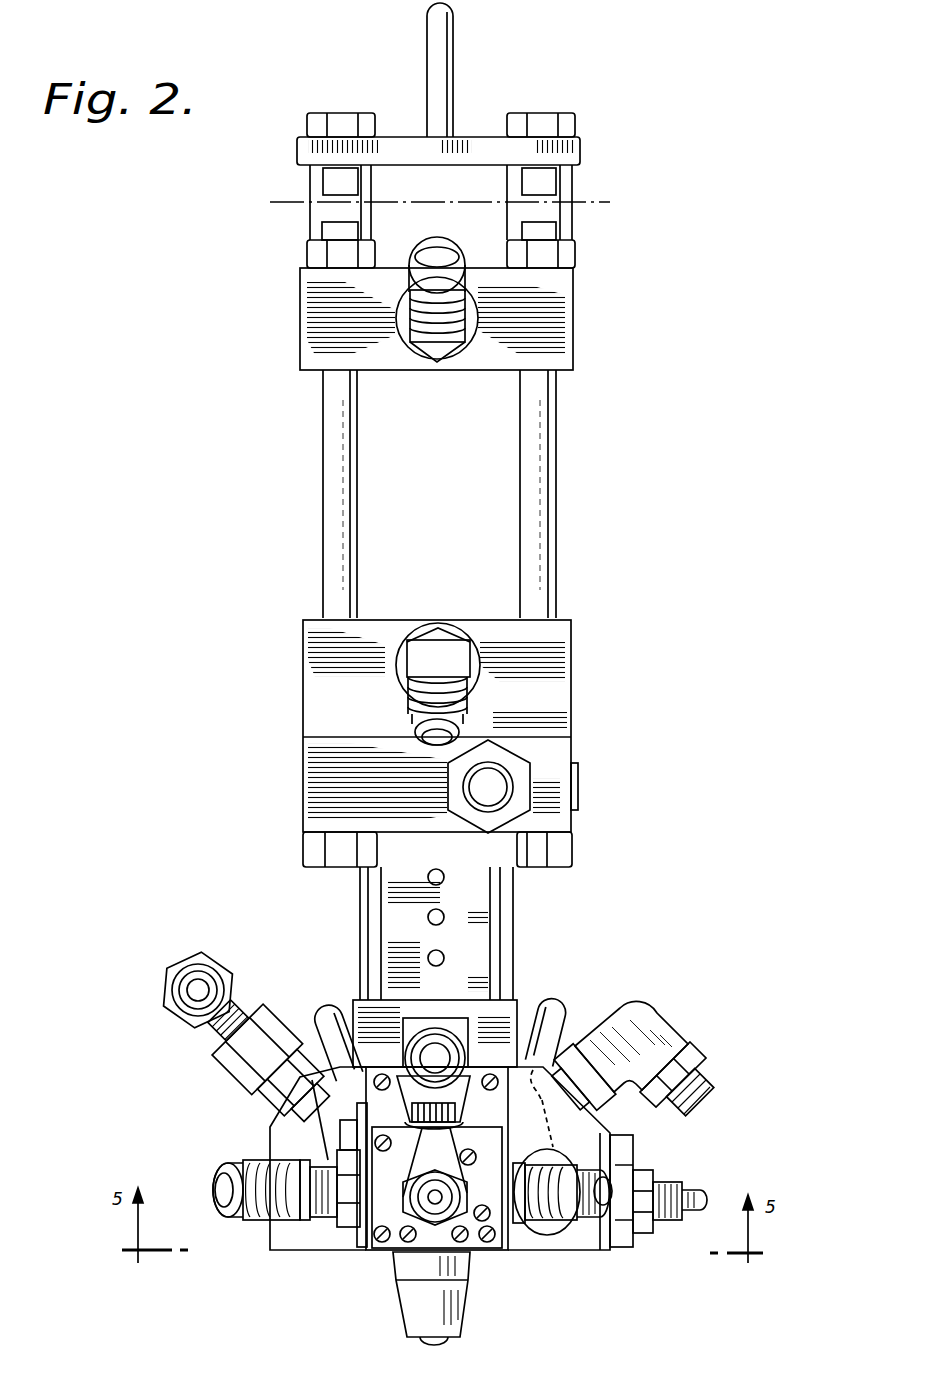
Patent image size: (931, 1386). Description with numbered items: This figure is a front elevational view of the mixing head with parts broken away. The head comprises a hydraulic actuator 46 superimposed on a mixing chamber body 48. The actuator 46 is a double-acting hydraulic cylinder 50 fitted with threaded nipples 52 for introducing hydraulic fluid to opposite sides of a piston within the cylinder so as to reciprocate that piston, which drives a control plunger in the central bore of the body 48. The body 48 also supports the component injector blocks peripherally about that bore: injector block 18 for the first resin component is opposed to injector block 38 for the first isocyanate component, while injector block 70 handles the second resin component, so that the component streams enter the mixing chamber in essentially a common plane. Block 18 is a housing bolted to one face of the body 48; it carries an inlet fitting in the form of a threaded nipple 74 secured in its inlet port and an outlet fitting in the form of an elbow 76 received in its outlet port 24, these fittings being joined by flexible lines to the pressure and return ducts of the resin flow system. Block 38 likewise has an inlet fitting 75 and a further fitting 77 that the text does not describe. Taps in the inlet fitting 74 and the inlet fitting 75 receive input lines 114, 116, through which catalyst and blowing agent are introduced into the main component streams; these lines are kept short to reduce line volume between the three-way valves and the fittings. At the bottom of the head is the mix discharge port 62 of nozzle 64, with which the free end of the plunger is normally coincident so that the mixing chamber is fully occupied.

The injector block 18 is at (580, 1240).
The outlet port 24 is at (536, 1108).
The injector block 38 is at (302, 1242).
The hydraulic actuator 46 is at (588, 625).
The mixing chamber body 48 is at (344, 998).
The double-acting hydraulic cylinder 50 is at (466, 477).
The threaded nipples 52 is at (464, 259).
The mix discharge port 62 is at (436, 1342).
The nozzle 64 is at (464, 1310).
The injector block 70 is at (393, 1207).
The threaded nipple 74 is at (570, 1167).
The inlet fitting 75 is at (340, 1084).
The elbow 76 is at (655, 1043).
The fitting 77 is at (196, 1029).
The input line 114 is at (563, 1017).
The input line 116 is at (309, 1020).